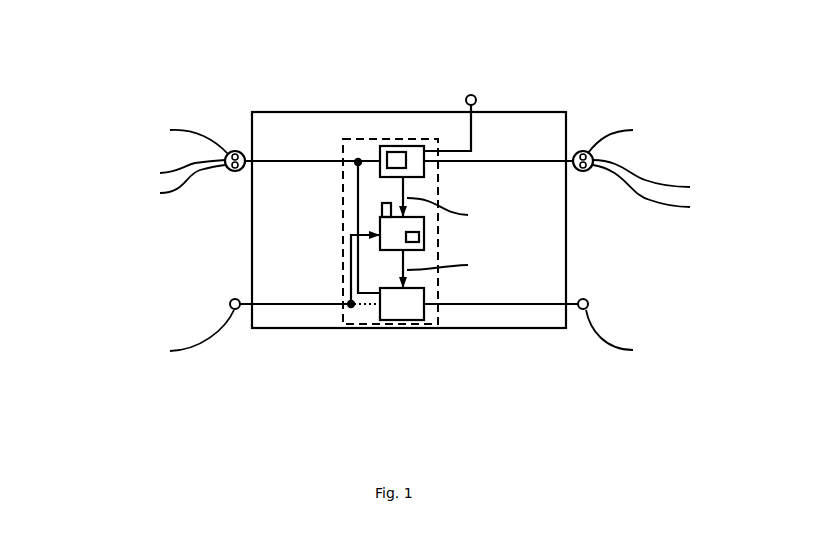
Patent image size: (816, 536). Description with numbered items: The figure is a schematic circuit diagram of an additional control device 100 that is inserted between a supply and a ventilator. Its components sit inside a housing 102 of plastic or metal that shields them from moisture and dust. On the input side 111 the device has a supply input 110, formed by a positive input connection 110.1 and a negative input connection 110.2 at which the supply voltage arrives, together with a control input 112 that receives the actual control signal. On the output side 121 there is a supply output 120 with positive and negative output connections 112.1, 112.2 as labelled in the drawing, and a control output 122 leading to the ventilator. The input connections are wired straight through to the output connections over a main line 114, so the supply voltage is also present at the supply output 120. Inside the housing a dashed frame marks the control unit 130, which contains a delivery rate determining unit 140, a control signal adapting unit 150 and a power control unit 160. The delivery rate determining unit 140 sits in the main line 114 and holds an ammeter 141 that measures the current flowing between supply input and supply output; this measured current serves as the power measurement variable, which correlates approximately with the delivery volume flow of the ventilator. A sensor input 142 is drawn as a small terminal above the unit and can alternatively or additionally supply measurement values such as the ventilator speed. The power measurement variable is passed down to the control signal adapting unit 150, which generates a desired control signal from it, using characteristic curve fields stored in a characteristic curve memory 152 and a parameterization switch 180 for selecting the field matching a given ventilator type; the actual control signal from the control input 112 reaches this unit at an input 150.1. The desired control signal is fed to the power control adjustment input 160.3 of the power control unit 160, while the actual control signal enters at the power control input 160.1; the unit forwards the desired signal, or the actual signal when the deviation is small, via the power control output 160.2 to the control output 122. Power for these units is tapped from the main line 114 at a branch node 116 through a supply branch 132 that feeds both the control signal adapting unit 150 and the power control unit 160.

The additional control device 100 is at (563, 38).
The housing 102 is at (328, 112).
The supply input 110 is at (230, 128).
The positive input connection 110.1 is at (171, 170).
The negative input connection 110.2 is at (171, 183).
The input side 111 is at (95, 226).
The control input 112 is at (230, 285).
The main line 114 is at (492, 161).
The branch node 116 is at (357, 156).
The supply output 120 is at (585, 128).
The first output supply line 112.1 is at (664, 176).
The second output supply line 112.2 is at (664, 189).
The output side 121 is at (698, 228).
The control output 122 is at (585, 282).
The control unit 130 is at (422, 146).
The supply branch 132 is at (358, 182).
The delivery rate determining unit 140 is at (417, 170).
The ammeter 141 is at (397, 152).
The sensor input 142 is at (473, 96).
The control signal adapting unit 150 is at (422, 222).
The signal input of evaluation unit 150.1 is at (352, 236).
The characteristic curve memory 152 is at (418, 238).
The power control unit 160 is at (428, 296).
The power control input 160.1 is at (380, 305).
The power control output 160.2 is at (413, 298).
The power control adjustment input 160.3 is at (398, 284).
The parameterization switch 180 is at (382, 210).